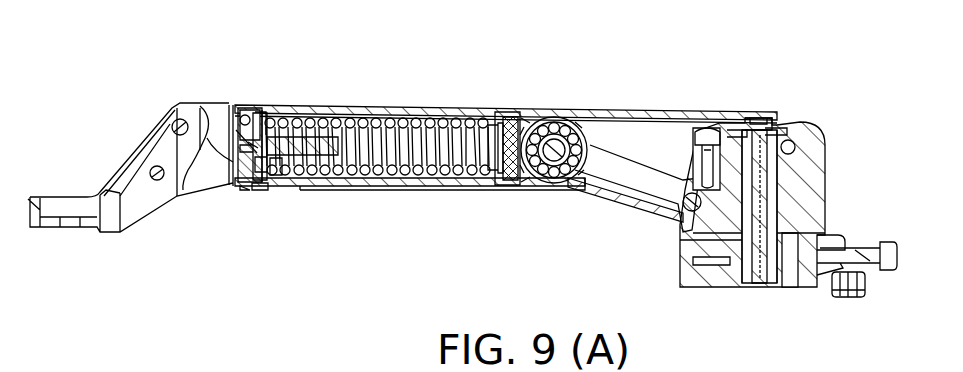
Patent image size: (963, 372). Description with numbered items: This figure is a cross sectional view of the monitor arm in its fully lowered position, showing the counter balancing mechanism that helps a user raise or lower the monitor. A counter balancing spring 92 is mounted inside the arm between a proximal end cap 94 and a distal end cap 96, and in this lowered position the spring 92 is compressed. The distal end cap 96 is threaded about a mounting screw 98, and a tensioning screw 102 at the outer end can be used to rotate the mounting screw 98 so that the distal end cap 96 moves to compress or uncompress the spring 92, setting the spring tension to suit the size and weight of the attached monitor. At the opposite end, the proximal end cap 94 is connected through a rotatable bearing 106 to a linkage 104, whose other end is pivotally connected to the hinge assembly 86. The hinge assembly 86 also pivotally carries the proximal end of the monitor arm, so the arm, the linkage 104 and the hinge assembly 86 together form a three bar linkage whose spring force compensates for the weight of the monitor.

The hinge assembly 86 is at (813, 130).
The counter balancing spring 92 is at (390, 185).
The proximal end cap 94 is at (523, 110).
The distal end cap 96 is at (258, 106).
The mounting screw 98 is at (267, 186).
The tensioning screw 102 is at (233, 193).
The linkage 104 is at (628, 193).
The rotatable bearing 106 is at (557, 188).